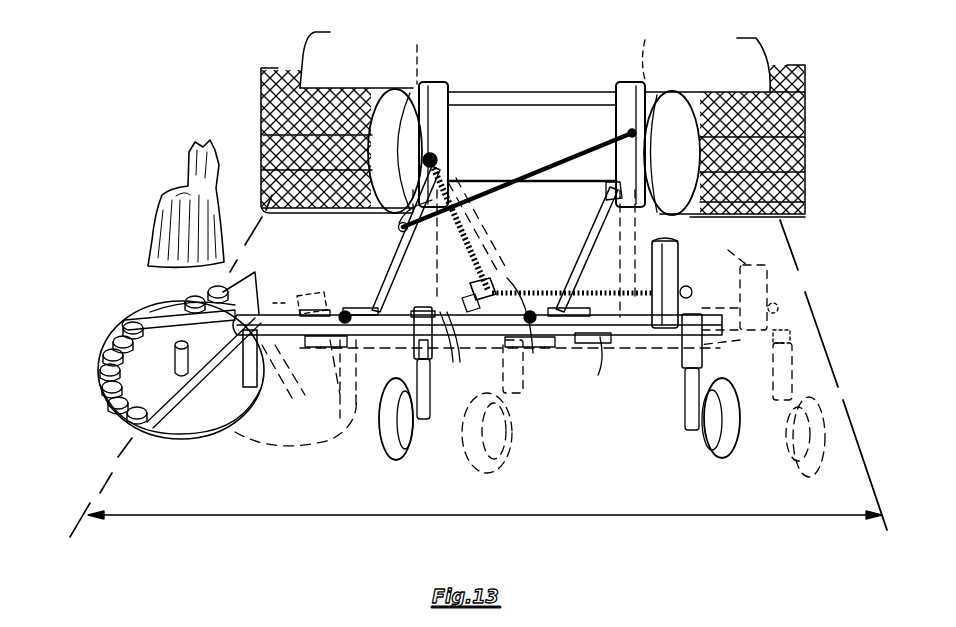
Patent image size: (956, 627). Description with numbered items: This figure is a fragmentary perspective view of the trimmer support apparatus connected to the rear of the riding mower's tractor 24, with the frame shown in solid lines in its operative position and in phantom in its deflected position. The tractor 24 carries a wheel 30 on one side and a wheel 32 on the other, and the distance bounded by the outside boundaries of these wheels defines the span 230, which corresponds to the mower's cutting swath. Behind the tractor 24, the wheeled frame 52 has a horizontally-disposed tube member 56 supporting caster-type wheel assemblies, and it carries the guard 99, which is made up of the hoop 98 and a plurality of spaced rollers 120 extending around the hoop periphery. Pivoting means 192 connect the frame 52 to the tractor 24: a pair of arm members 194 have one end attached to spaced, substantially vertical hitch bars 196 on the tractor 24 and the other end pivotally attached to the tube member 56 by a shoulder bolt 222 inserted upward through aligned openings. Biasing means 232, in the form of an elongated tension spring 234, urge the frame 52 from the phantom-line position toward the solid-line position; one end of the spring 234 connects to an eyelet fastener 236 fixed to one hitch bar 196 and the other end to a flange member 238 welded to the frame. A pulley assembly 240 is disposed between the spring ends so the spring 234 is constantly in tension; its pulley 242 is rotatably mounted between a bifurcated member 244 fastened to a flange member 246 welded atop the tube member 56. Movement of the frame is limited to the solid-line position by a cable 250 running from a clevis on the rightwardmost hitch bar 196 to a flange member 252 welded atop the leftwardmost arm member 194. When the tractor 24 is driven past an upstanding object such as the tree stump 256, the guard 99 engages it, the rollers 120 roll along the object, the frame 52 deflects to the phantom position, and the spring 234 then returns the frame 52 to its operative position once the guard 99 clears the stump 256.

The tractor 24 is at (748, 42).
The wheel 30 is at (260, 89).
The wheel 32 is at (792, 90).
The wheeled frame 52 is at (673, 256).
The horizontally-disposed tube member 56 is at (464, 347).
The hoop 98 is at (188, 437).
The guard 99 is at (156, 312).
The rollers 120 is at (210, 292).
The pivoting means 192 is at (318, 271).
The arm members 194 is at (613, 204).
The hitch bars 196 is at (448, 141).
The shoulder bolt 222 is at (345, 310).
The span 230 is at (440, 517).
The biasing means 232 is at (490, 241).
The tension spring 234 is at (478, 210).
The eyelet fastener 236 is at (438, 160).
The flange member 238 is at (690, 286).
The pulley assembly 240 is at (486, 280).
The pulley 242 is at (500, 290).
The bifurcated member 244 is at (522, 349).
The flange member 246 is at (444, 355).
The cable 250 is at (537, 176).
The flange member 252 is at (396, 226).
The tree stump 256 is at (165, 224).